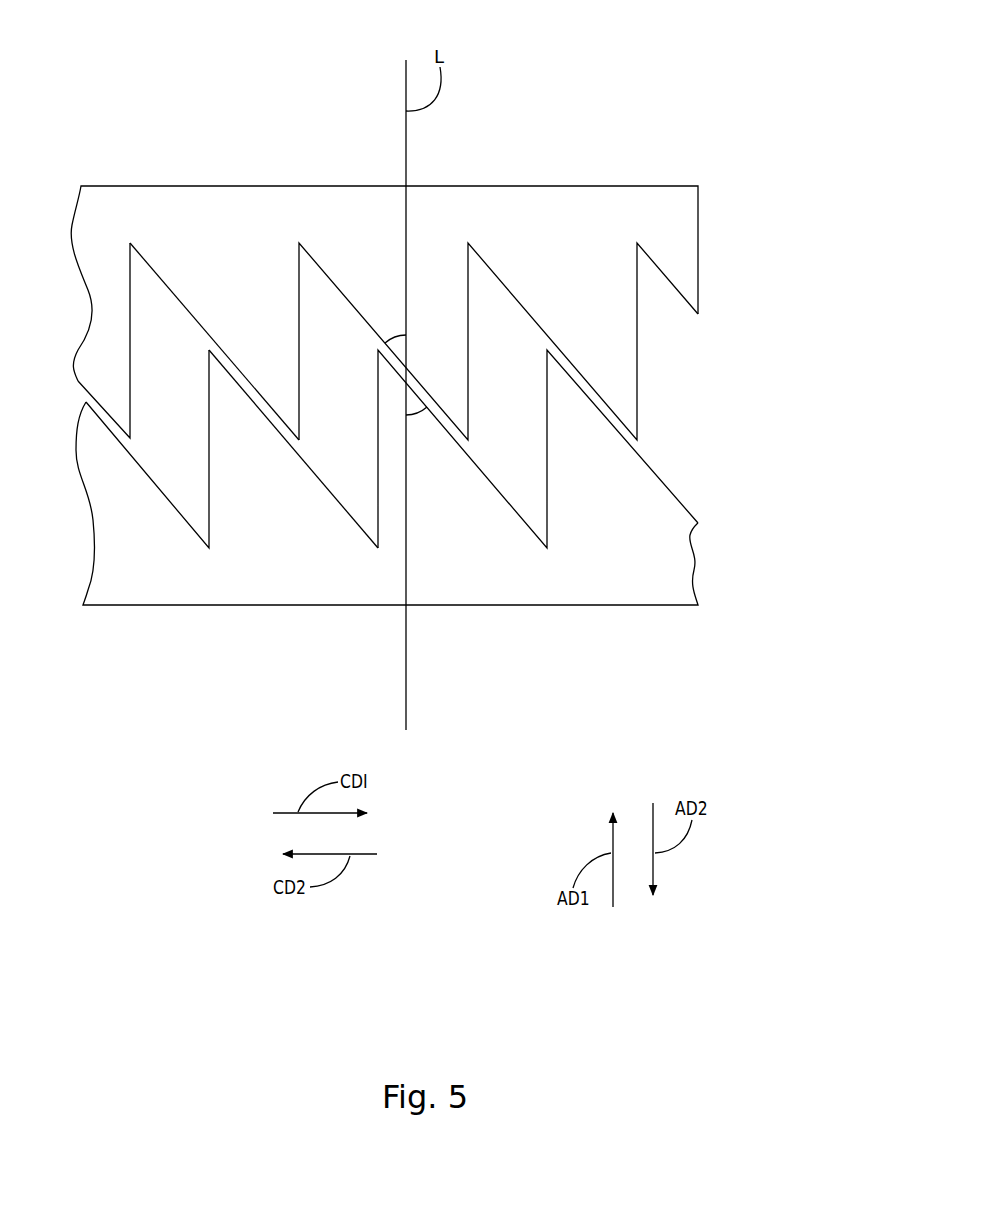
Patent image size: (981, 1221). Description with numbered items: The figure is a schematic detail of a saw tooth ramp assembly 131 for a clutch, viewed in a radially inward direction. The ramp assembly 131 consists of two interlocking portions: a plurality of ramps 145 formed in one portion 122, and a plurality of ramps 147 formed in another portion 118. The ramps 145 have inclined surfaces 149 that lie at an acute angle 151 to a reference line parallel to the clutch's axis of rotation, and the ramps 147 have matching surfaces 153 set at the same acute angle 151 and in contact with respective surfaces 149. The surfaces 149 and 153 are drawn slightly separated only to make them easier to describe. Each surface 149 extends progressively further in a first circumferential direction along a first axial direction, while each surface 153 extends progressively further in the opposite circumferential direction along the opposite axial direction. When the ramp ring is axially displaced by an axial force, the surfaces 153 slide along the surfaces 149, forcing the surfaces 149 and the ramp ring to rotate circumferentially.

The portion 118 is at (393, 527).
The portion 122 is at (384, 250).
The ramp assembly 131 is at (436, 352).
The ramps 145 is at (156, 241).
The ramps 147 is at (298, 520).
The surfaces 149 is at (183, 297).
The acute angle 151 is at (392, 338).
The surfaces 153 is at (297, 449).